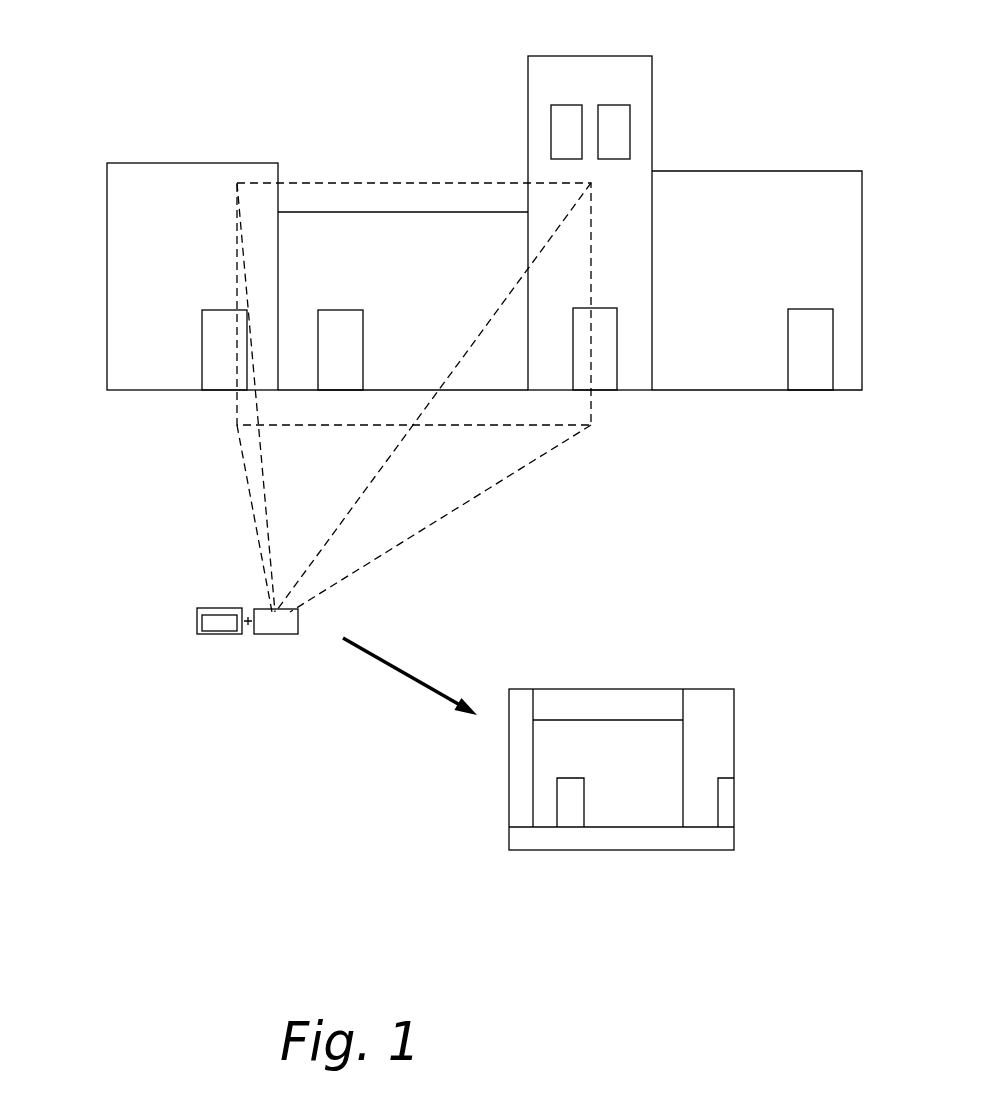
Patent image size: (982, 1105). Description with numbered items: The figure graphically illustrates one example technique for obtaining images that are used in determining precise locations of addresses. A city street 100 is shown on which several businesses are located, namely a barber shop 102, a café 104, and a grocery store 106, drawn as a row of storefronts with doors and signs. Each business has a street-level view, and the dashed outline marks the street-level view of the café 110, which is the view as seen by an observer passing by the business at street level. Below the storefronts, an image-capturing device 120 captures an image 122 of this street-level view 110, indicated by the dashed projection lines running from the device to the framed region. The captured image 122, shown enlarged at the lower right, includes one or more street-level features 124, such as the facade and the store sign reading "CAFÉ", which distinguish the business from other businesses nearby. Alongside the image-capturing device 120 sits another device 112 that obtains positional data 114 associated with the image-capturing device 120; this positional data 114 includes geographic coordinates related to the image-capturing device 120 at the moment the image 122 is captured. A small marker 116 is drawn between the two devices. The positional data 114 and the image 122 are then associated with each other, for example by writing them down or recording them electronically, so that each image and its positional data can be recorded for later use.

The city street 100 is at (121, 420).
The barber shop 102 is at (582, 56).
The café 104 is at (365, 212).
The grocery store 106 is at (747, 171).
The street-level view of café 110 is at (307, 183).
The device 112 is at (205, 608).
The positional data 114 is at (208, 636).
The user / reference point 116 is at (248, 642).
The image-capturing device 120 is at (278, 634).
The image 122 is at (621, 765).
The street-level features 124 is at (636, 740).